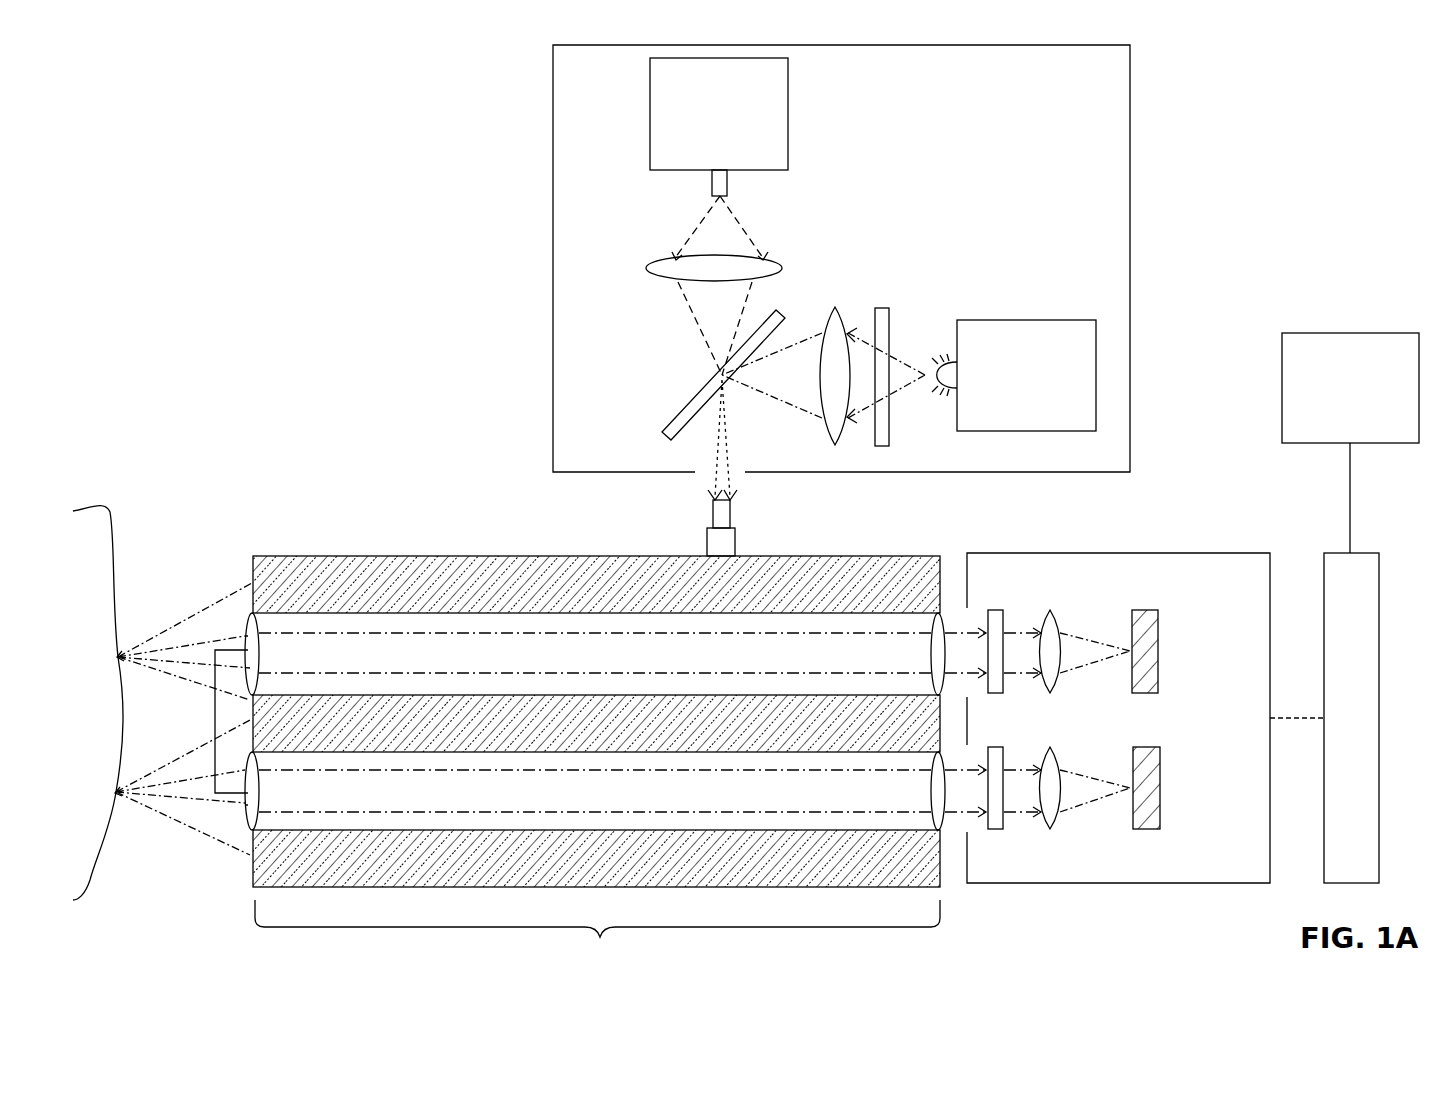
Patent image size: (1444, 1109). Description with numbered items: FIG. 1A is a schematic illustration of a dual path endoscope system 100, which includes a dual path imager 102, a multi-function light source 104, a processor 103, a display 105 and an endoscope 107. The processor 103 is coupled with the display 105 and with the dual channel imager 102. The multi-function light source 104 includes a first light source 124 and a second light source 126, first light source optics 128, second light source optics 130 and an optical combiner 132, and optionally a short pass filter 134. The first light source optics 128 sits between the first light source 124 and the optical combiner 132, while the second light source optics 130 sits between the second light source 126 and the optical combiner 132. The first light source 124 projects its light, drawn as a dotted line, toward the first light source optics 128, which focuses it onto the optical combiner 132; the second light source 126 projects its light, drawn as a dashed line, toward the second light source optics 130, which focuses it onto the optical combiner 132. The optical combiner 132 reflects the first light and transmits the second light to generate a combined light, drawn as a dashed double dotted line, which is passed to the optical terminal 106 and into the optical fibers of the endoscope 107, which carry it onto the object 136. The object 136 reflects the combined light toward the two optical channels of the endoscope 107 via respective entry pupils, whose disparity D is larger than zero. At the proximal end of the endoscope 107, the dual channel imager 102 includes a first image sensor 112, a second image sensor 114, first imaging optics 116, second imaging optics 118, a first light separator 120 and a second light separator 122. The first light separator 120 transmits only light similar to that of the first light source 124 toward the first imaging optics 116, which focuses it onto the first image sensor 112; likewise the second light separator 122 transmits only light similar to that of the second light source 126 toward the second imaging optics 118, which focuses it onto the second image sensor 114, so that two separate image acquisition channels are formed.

The endoscope system 100 is at (1233, 182).
The dual path imager 102 is at (1178, 553).
The processor 103 is at (1379, 638).
The multi-function light source 104 is at (1131, 196).
The display 105 is at (1392, 333).
The optical terminal 106 is at (708, 510).
The endoscope 107 is at (605, 940).
The first image sensor 112 is at (1160, 618).
The second image sensor 114 is at (1160, 757).
The first imaging optics 116 is at (1050, 610).
The second imaging optics 118 is at (1050, 829).
The first light separator 120 is at (995, 693).
The second light separator 122 is at (995, 829).
The first light source 124 is at (1075, 320).
The second light source 126 is at (790, 112).
The first light source optics 128 is at (835, 306).
The second light source optics 130 is at (655, 270).
The optical combiner 132 is at (667, 428).
The short pass filter 134 is at (882, 307).
The object 136 is at (103, 505).
The disparity D is at (215, 728).